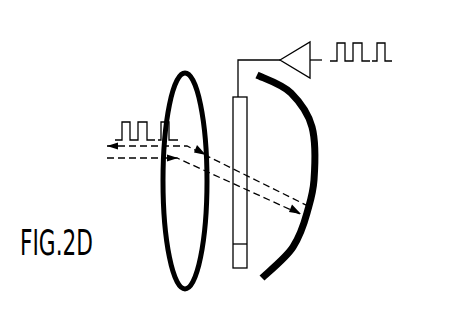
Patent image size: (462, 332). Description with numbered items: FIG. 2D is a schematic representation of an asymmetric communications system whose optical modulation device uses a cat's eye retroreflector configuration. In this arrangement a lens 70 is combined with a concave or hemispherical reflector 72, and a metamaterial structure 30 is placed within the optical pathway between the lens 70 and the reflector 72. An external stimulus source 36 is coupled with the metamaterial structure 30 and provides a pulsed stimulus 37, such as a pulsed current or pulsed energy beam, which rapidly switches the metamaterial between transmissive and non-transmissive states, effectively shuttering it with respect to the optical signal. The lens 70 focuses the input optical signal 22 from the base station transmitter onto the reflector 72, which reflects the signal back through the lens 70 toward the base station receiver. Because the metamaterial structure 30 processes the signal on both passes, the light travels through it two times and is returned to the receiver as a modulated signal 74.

The optical signal 22 is at (127, 159).
The metamaterial structure 30 is at (247, 148).
The external stimulus source 36 is at (298, 50).
The pulsed stimulus 37 is at (387, 48).
The lens 70 is at (161, 232).
The reflector 72 is at (317, 160).
The modulated signal 74 is at (144, 141).